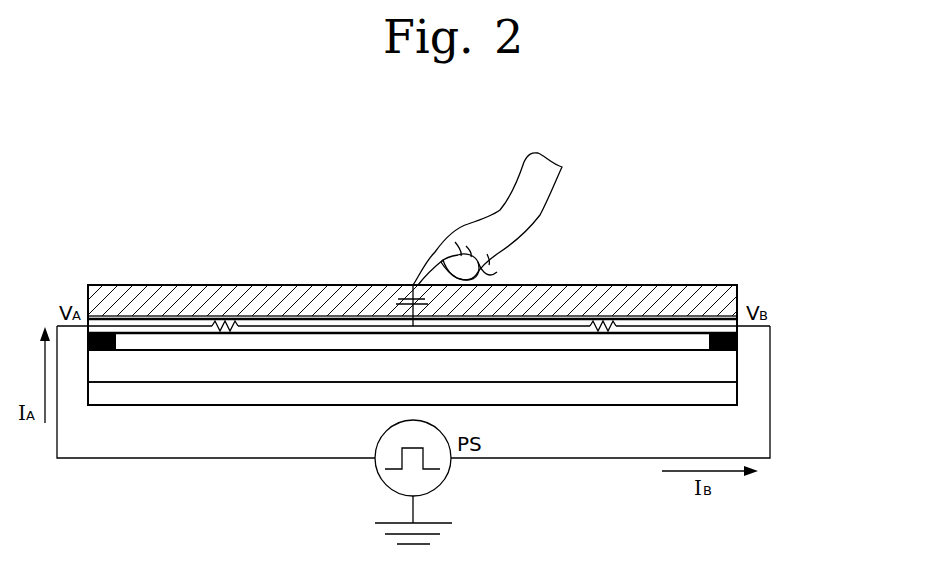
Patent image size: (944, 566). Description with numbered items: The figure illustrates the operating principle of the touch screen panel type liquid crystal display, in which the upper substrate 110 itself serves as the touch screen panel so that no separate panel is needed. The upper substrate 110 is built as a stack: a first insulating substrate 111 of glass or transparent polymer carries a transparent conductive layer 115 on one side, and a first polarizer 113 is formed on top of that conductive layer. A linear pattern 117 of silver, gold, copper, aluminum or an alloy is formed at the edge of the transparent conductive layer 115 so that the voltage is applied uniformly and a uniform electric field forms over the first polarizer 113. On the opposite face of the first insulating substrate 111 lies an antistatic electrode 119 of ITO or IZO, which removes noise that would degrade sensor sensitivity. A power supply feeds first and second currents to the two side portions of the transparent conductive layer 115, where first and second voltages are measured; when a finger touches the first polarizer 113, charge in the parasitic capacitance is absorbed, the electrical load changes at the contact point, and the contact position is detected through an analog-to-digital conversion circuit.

The upper substrate 110 is at (874, 270).
The first polarizer 113 is at (732, 294).
The transparent conductive layer 115 is at (732, 329).
The linear pattern 117 is at (737, 343).
The first insulating substrate 111 is at (732, 366).
The antistatic electrode 119 is at (732, 393).